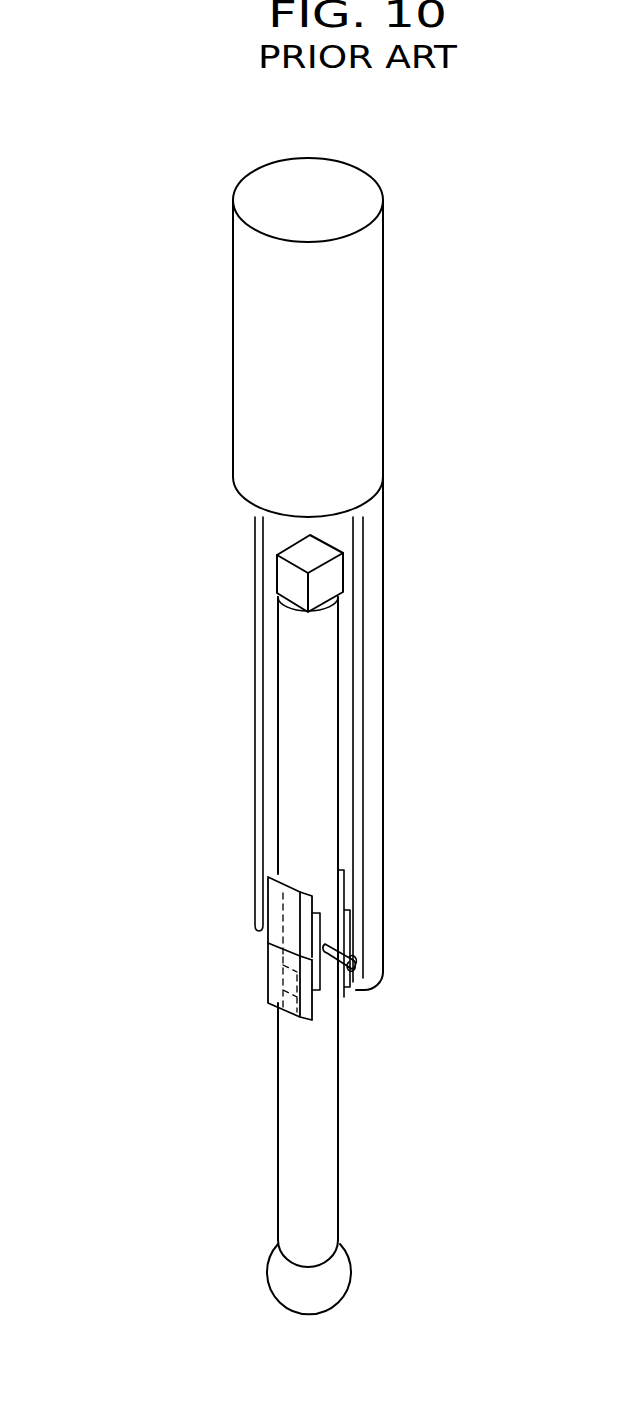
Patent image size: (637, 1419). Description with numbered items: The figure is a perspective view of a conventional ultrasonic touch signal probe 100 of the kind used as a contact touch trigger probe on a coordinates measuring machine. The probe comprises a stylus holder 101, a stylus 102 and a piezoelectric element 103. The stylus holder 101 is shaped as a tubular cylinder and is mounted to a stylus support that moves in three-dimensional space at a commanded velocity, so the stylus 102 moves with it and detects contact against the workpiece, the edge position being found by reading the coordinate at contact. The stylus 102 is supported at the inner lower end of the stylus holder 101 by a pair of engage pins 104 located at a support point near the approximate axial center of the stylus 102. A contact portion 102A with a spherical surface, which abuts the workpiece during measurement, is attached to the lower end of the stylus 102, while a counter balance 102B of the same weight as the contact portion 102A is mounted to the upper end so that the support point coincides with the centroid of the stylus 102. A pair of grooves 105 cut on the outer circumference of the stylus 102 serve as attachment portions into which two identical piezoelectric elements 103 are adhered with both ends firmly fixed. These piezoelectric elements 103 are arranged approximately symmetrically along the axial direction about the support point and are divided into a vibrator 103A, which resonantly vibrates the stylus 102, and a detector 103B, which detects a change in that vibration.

The touch signal probe 100 is at (156, 302).
The stylus holder 101 is at (358, 408).
The stylus 102 is at (320, 1128).
The contact portion 102A is at (347, 1287).
The counter balance 102B is at (325, 573).
The piezoelectric element 103 is at (260, 962).
The vibrator 103A is at (263, 920).
The detector 103B is at (270, 977).
The engage pins 104 is at (363, 945).
The grooves 105 is at (263, 1015).